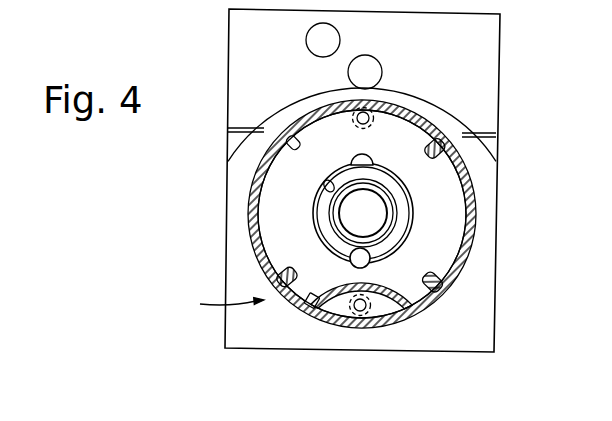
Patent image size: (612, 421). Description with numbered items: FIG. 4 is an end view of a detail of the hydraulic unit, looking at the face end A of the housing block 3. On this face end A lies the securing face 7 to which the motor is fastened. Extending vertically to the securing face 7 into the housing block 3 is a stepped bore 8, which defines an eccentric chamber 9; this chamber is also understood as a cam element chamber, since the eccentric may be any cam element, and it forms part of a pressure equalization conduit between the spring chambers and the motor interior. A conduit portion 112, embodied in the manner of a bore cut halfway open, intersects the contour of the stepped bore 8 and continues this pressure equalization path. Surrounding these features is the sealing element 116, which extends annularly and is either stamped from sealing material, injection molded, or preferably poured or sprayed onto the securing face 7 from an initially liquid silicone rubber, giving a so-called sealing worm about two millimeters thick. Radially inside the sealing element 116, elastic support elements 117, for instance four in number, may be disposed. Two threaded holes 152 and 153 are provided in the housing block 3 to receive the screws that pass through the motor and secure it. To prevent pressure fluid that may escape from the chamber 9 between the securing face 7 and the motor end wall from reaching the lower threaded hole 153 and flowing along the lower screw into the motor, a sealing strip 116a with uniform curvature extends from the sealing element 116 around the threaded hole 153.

The housing block 3 is at (250, 50).
The securing face 7 is at (268, 237).
The stepped bore 8 is at (326, 191).
The eccentric chamber 9 is at (312, 211).
The conduit portion 112 is at (362, 158).
The sealing element 116 is at (466, 252).
The sealing strip 116a is at (300, 312).
The support elements 117 is at (437, 292).
The threaded hole 152 is at (371, 121).
The threaded hole 153 is at (357, 311).
The face end A is at (223, 304).